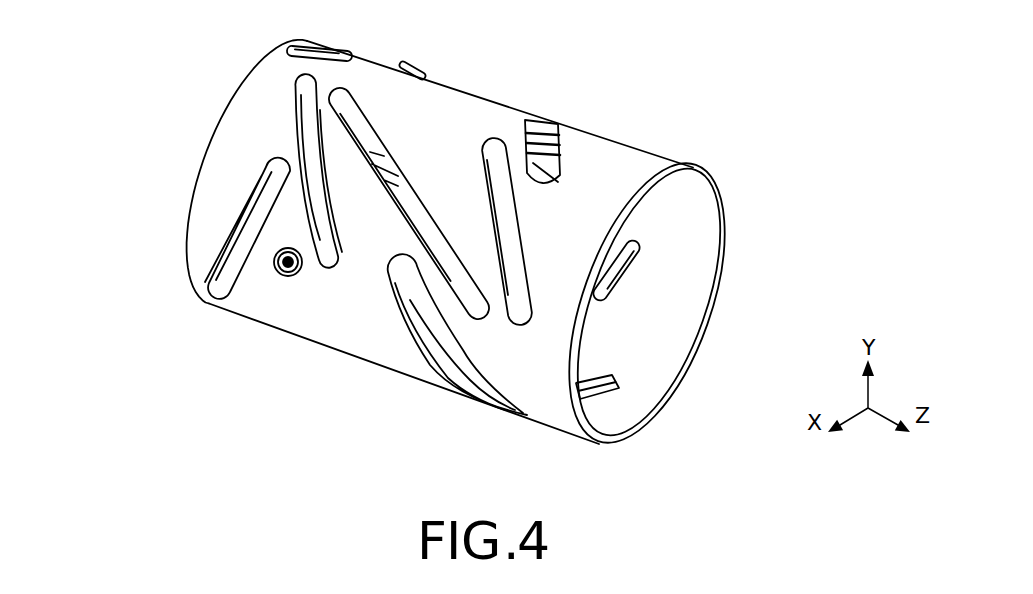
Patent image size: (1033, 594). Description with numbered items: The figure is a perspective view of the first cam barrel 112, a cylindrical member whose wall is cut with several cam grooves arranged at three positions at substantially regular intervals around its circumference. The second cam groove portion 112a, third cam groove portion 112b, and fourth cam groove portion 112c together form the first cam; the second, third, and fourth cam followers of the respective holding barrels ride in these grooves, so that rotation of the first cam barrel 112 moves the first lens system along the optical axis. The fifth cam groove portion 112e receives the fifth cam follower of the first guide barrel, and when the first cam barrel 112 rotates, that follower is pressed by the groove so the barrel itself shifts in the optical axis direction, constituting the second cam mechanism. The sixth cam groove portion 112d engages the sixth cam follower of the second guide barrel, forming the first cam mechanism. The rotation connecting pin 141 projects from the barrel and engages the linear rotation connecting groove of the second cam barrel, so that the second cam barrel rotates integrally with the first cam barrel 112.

The first cam barrel 112 is at (677, 305).
The second cam groove portion 112a is at (324, 90).
The third cam groove portion 112b is at (377, 149).
The fourth cam groove portion 112c is at (560, 120).
The sixth cam groove portion 112d is at (437, 358).
The fifth cam groove portion 112e is at (228, 265).
The rotation connecting pin 141 is at (274, 262).